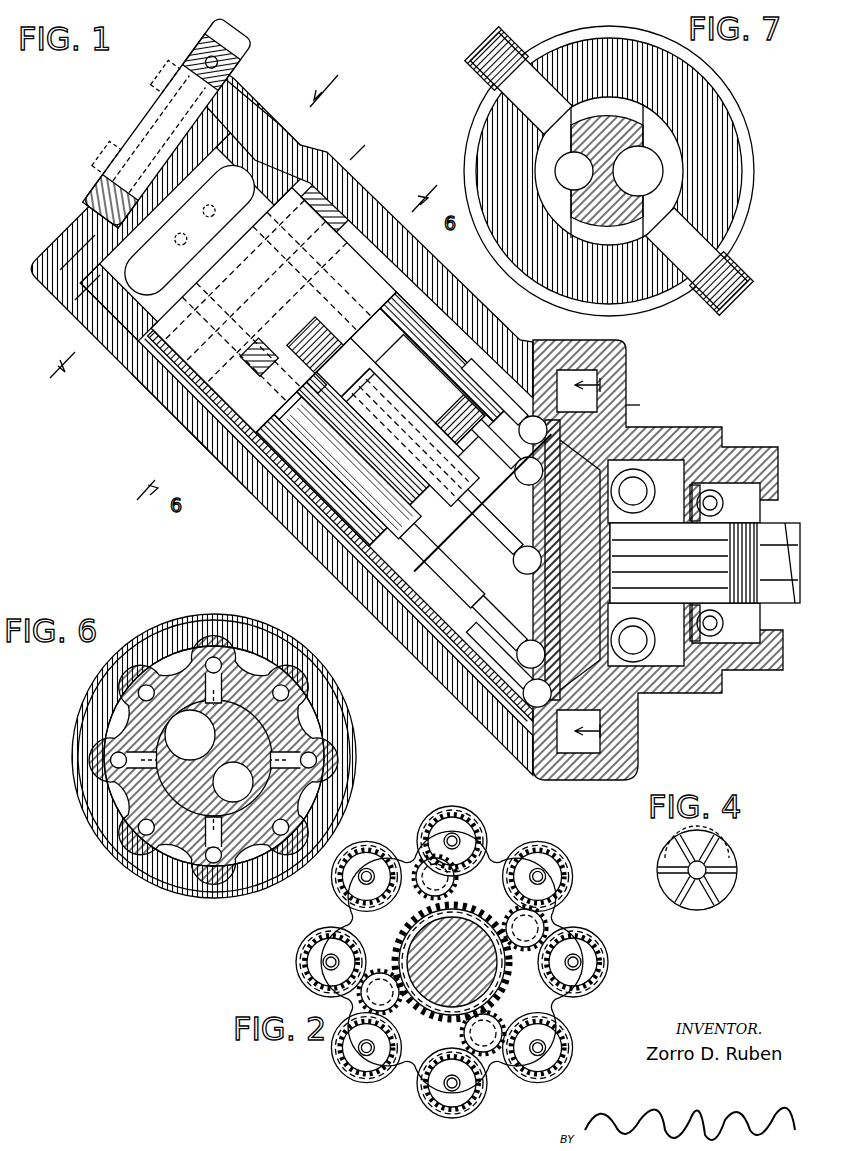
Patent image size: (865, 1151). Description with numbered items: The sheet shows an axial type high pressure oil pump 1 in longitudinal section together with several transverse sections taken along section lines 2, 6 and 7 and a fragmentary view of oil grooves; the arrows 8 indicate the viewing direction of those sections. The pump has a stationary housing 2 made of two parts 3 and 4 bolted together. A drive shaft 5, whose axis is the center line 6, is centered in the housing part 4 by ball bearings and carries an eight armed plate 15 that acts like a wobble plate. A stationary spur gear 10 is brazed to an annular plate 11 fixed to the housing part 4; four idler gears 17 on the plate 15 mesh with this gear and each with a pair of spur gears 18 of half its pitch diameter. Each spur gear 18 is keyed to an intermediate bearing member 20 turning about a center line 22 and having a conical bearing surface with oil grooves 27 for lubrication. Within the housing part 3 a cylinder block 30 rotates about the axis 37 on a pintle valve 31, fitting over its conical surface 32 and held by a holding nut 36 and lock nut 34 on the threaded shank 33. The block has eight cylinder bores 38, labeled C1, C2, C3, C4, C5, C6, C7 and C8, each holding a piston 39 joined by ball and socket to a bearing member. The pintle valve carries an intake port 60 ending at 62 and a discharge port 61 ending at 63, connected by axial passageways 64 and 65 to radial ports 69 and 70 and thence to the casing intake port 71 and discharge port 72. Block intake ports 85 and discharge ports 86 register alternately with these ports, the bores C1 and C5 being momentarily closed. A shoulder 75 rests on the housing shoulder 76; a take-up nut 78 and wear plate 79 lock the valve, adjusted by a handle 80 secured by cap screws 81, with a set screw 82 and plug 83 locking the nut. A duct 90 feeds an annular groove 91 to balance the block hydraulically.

In FIG. 1, the pump 1 is at (144, 454).
In FIG. 1, the stationary housing 2 is at (475, 432).
In FIG. 1, the housing part 3 is at (752, 192).
In FIG. 7, the housing part 3 is at (727, 182).
In FIG. 1, the housing part 4 is at (700, 432).
In FIG. 1, the drive shaft 5 is at (692, 590).
In FIG. 1, the center line 6 is at (678, 560).
In FIG. 1, the section line 7- 7 is at (189, 215).
In FIG. 1, the piston 8 is at (386, 432).
In FIG. 1, the stationary spur gear 10 is at (573, 478).
In FIG. 2, the stationary spur gear 10 is at (440, 1020).
In FIG. 1, the annular plate 11 is at (640, 405).
In FIG. 1, the eight armed plate 15 is at (542, 492).
In FIG. 2, the eight armed plate 15 is at (487, 877).
In FIG. 2, the idler gears 17 is at (520, 926).
In FIG. 2, the spur gears 18 is at (367, 867).
In FIG. 1, the intermediate bearing member 20 is at (530, 470).
In FIG. 4, the intermediate bearing member 20 is at (726, 856).
In FIG. 2, the center line 22 is at (537, 876).
In FIG. 4, the oil grooves 27 is at (720, 878).
In FIG. 1, the cylinder block 30 is at (190, 358).
In FIG. 6, the cylinder block 30 is at (340, 710).
In FIG. 1, the pintle valve 31 is at (190, 303).
In FIG. 6, the pintle valve 31 is at (195, 808).
In FIG. 1, the conical surface 32 is at (197, 328).
In FIG. 1, the threaded shank 33 is at (392, 412).
In FIG. 1, the lock nut 34 is at (418, 420).
In FIG. 1, the cylinder block holding nut 36 is at (362, 377).
In FIG. 1, the axis of rotation 37 is at (128, 165).
In FIG. 1, the cylinder bores 38 is at (297, 457).
In FIG. 1, the piston 39 is at (417, 580).
In FIG. 1, the intake port 60 is at (262, 362).
In FIG. 6, the intake port 60 is at (205, 705).
In FIG. 1, the discharge port 61 is at (306, 262).
In FIG. 6, the slot termination 62 is at (153, 772).
In FIG. 6, the slot termination 63 is at (350, 740).
In FIG. 1, the intake passageway 64 is at (214, 228).
In FIG. 7, the intake passageway 64 is at (642, 182).
In FIG. 6, the intake passageway 64 is at (175, 740).
In FIG. 1, the discharge passageway 65 is at (196, 218).
In FIG. 7, the discharge passageway 65 is at (573, 165).
In FIG. 6, the discharge passageway 65 is at (240, 785).
In FIG. 7, the radial port 69 is at (660, 134).
In FIG. 7, the radial port 70 is at (548, 190).
In FIG. 7, the intake port 71 is at (673, 247).
In FIG. 7, the discharge port 72 is at (520, 75).
In FIG. 1, the flat circular shoulder 75 is at (75, 302).
In FIG. 1, the shoulder 76 is at (268, 140).
In FIG. 1, the take-up nut 78 is at (86, 224).
In FIG. 1, the replaceable wear plate 79 is at (110, 260).
In FIG. 1, the handle 80 is at (176, 85).
In FIG. 1, the cap screws 81 is at (146, 108).
In FIG. 1, the set screw 82 is at (232, 92).
In FIG. 1, the plug 83 is at (206, 95).
In FIG. 1, the intake ports 85 is at (213, 413).
In FIG. 6, the intake ports 85 is at (330, 690).
In FIG. 1, the discharge ports 86 is at (183, 390).
In FIG. 1, the duct 90 is at (318, 345).
In FIG. 1, the annular groove 91 is at (322, 388).
In FIG. 1, the cylinder bore C1 is at (392, 205).
In FIG. 6, the cylinder bore C1 is at (283, 690).
In FIG. 6, the cylinder bore C2 is at (214, 662).
In FIG. 6, the cylinder bore C3 is at (137, 660).
In FIG. 6, the cylinder bore C4 is at (115, 760).
In FIG. 6, the cylinder bore C5 is at (142, 826).
In FIG. 6, the cylinder bore C6 is at (213, 858).
In FIG. 6, the cylinder bore C7 is at (280, 830).
In FIG. 6, the cylinder bore C8 is at (311, 758).